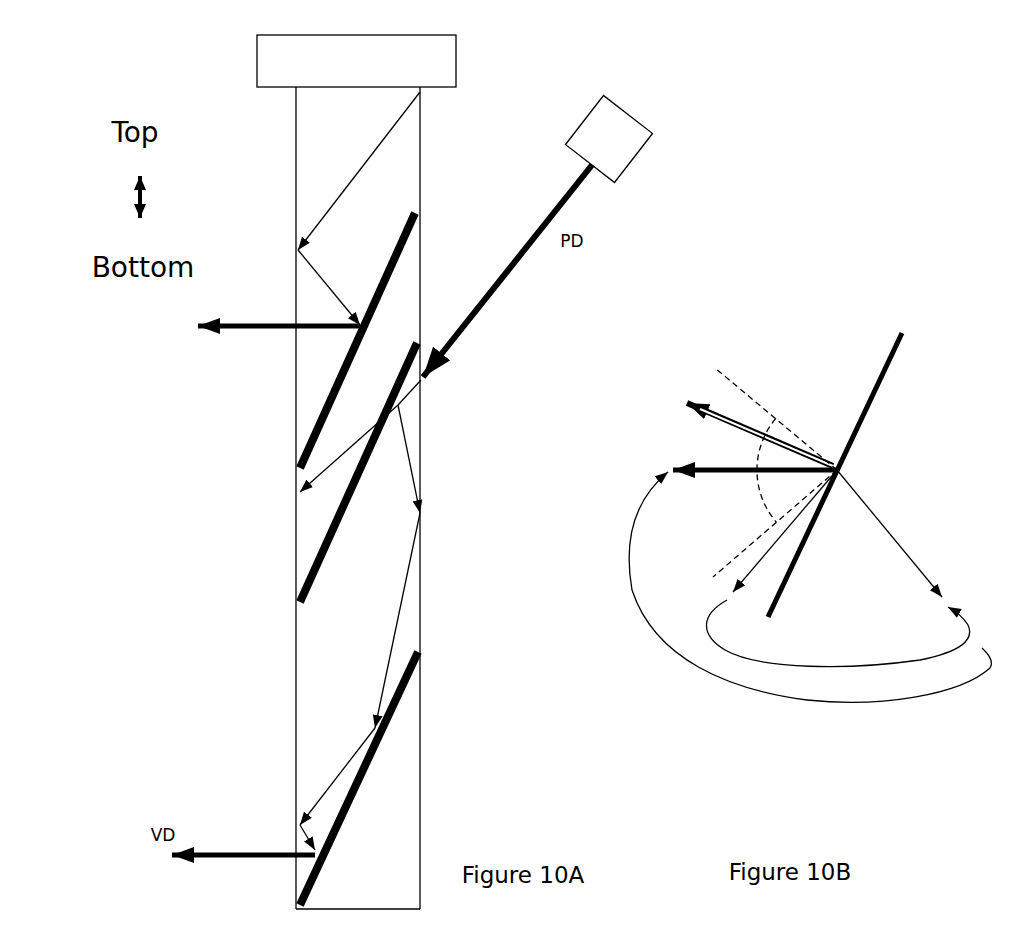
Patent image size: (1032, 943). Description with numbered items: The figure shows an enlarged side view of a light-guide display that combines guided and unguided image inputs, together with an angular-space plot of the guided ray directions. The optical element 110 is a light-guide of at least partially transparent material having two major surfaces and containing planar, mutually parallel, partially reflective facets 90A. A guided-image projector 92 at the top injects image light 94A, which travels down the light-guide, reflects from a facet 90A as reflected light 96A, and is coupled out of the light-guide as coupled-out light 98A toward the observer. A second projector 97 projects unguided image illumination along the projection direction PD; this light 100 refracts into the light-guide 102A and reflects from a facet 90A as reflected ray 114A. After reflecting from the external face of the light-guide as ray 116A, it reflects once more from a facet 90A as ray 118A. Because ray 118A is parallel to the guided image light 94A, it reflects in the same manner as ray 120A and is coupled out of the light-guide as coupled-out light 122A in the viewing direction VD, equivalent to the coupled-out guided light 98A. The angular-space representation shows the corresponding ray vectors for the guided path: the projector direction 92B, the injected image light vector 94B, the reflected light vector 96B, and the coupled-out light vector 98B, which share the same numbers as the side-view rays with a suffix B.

In FIG. 10A, the guided-image projector 92 is at (356, 61).
In FIG. 10A, the optical element 110 is at (358, 498).
In FIG. 10A, the image light 94A is at (359, 171).
In FIG. 10A, the reflected light 96A is at (336, 287).
In FIG. 10A, the coupled-out light 98A is at (279, 315).
In FIG. 10A, the facet 90A is at (420, 222).
In FIG. 10A, the second projector 97 is at (609, 139).
In FIG. 10A, the light 100 is at (495, 285).
In FIG. 10A, the light-guide 102A is at (358, 472).
In FIG. 10A, the reflected ray 114A is at (392, 459).
In FIG. 10A, the reflected ray 116A is at (383, 620).
In FIG. 10A, the reflected ray 118A is at (359, 778).
In FIG. 10A, the reflected ray 120A is at (300, 827).
In FIG. 10A, the coupled-out light 122A is at (243, 871).
In FIG. 10B, the guided-image projector vector 92B is at (831, 488).
In FIG. 10B, the coupled-out light vector 98B is at (755, 458).
In FIG. 10B, the image light vector 94B is at (765, 538).
In FIG. 10B, the reflected light vector 96B is at (894, 533).